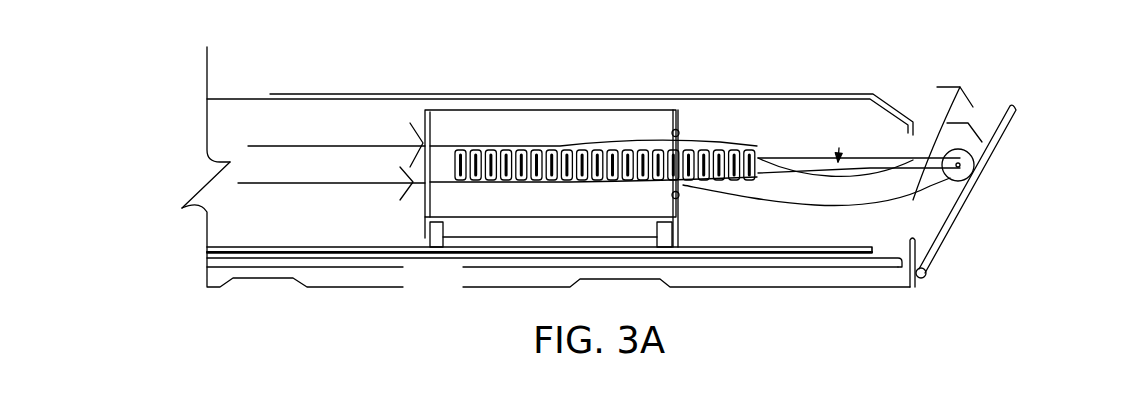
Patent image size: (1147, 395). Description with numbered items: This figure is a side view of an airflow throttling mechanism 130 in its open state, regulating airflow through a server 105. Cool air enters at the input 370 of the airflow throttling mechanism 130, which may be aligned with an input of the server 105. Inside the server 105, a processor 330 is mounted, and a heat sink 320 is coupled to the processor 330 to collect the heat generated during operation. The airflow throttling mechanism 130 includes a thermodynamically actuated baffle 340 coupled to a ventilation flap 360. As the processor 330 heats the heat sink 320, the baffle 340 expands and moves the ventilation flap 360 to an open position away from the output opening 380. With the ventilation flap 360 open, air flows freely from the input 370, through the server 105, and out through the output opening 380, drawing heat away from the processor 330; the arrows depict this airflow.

The server 105 is at (287, 123).
The airflow throttling mechanism 130 is at (358, 80).
The heat sink 320 is at (463, 200).
The processor 330 is at (490, 225).
The thermodynamically actuated baffle 340 is at (640, 163).
The ventilation flap 360 is at (973, 207).
The input 370 is at (200, 173).
The output opening 380 is at (983, 117).